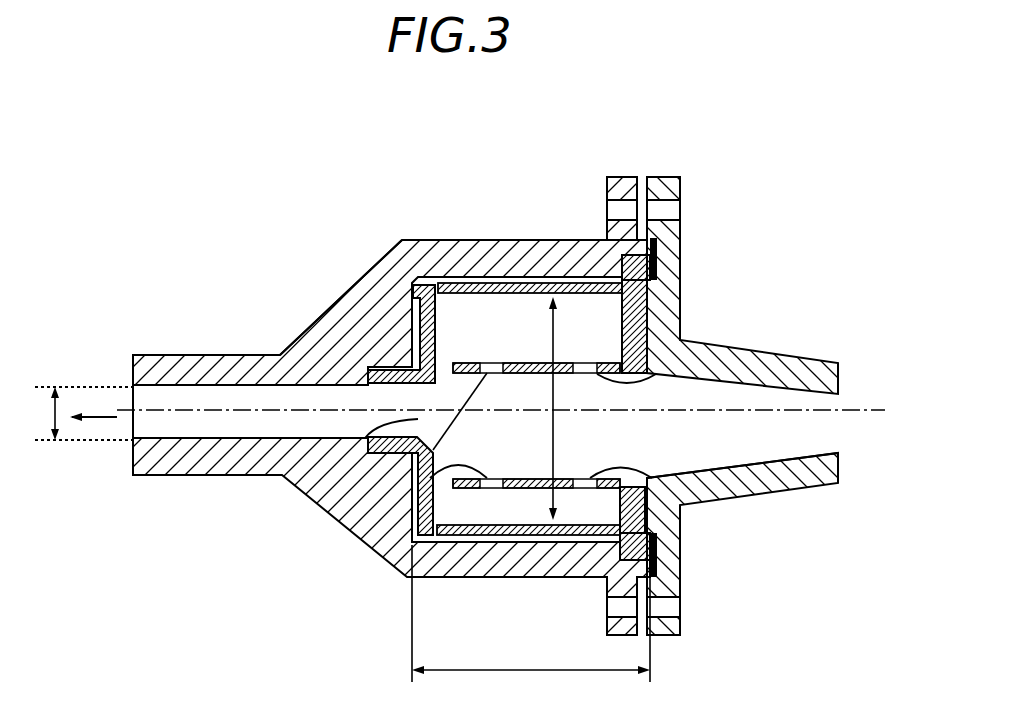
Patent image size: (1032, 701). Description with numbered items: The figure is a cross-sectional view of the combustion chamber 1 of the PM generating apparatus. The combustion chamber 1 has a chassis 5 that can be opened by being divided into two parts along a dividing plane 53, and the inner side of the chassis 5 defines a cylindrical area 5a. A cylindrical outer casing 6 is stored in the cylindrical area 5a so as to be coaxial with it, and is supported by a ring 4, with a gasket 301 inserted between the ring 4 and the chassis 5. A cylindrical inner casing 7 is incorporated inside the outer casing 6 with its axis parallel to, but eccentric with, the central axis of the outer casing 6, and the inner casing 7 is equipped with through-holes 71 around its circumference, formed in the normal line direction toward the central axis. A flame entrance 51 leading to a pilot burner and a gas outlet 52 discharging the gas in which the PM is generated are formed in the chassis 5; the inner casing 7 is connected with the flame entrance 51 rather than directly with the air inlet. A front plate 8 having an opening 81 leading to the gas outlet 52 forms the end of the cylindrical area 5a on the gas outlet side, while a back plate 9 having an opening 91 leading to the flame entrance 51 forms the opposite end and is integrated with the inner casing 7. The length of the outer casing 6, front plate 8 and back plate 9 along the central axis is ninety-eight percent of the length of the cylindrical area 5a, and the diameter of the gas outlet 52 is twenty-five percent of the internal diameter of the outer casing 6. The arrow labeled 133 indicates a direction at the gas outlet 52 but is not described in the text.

The combustion chamber 1 is at (450, 187).
The ring 4 is at (658, 265).
The chassis 5 is at (226, 356).
The cylindrical area 5a is at (499, 250).
The outer casing 6 is at (513, 363).
The inner casing 7 is at (458, 285).
The front plate 8 is at (412, 288).
The back plate 9 is at (650, 305).
The flame entrance 51 is at (678, 432).
The gas outlet 52 is at (393, 402).
The dividing plane 53 is at (630, 242).
The through-holes 71 is at (662, 367).
The opening 81 is at (368, 440).
The opening 91 is at (637, 445).
The flow direction 133 is at (94, 406).
The gasket 301 is at (657, 240).